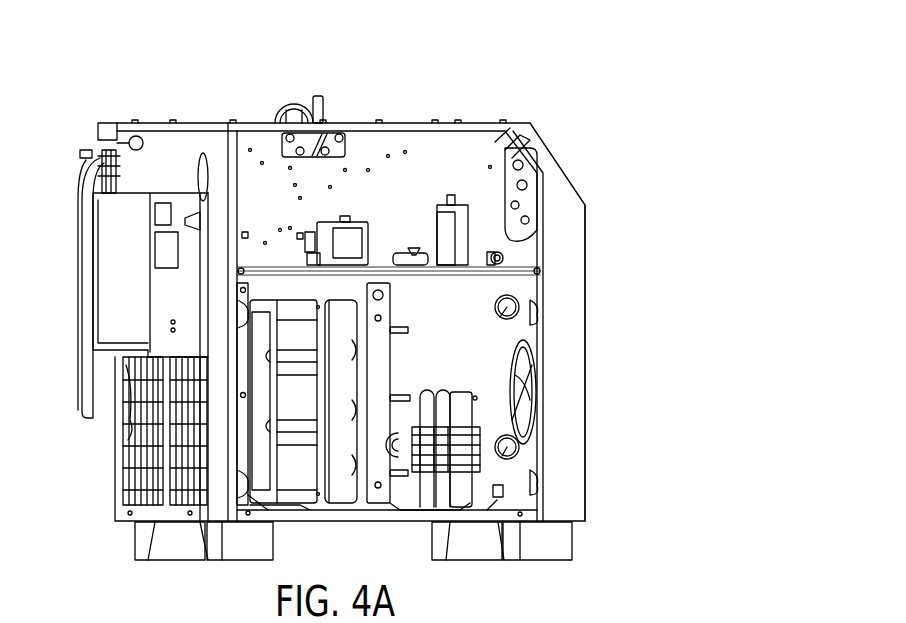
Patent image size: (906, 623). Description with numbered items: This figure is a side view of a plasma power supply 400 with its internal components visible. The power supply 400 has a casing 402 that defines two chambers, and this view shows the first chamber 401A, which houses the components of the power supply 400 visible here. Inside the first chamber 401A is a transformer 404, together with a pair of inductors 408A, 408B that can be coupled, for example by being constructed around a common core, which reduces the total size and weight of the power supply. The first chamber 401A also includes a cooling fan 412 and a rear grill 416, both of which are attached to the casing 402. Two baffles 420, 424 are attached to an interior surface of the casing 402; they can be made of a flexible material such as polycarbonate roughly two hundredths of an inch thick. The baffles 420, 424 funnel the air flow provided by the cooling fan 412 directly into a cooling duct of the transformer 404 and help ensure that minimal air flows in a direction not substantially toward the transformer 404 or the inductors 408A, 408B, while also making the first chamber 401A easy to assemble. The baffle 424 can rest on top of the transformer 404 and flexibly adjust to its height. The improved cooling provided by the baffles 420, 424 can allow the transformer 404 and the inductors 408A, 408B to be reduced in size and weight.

The plasma power supply 400 is at (512, 60).
The first chamber 401A is at (375, 152).
The casing 402 is at (558, 166).
The transformer 404 is at (297, 485).
The inductor 408A is at (433, 392).
The inductor 408B is at (460, 398).
The cooling fan 412 is at (518, 440).
The rear grill 416 is at (135, 460).
The baffle 420 is at (337, 387).
The baffle 424 is at (302, 290).